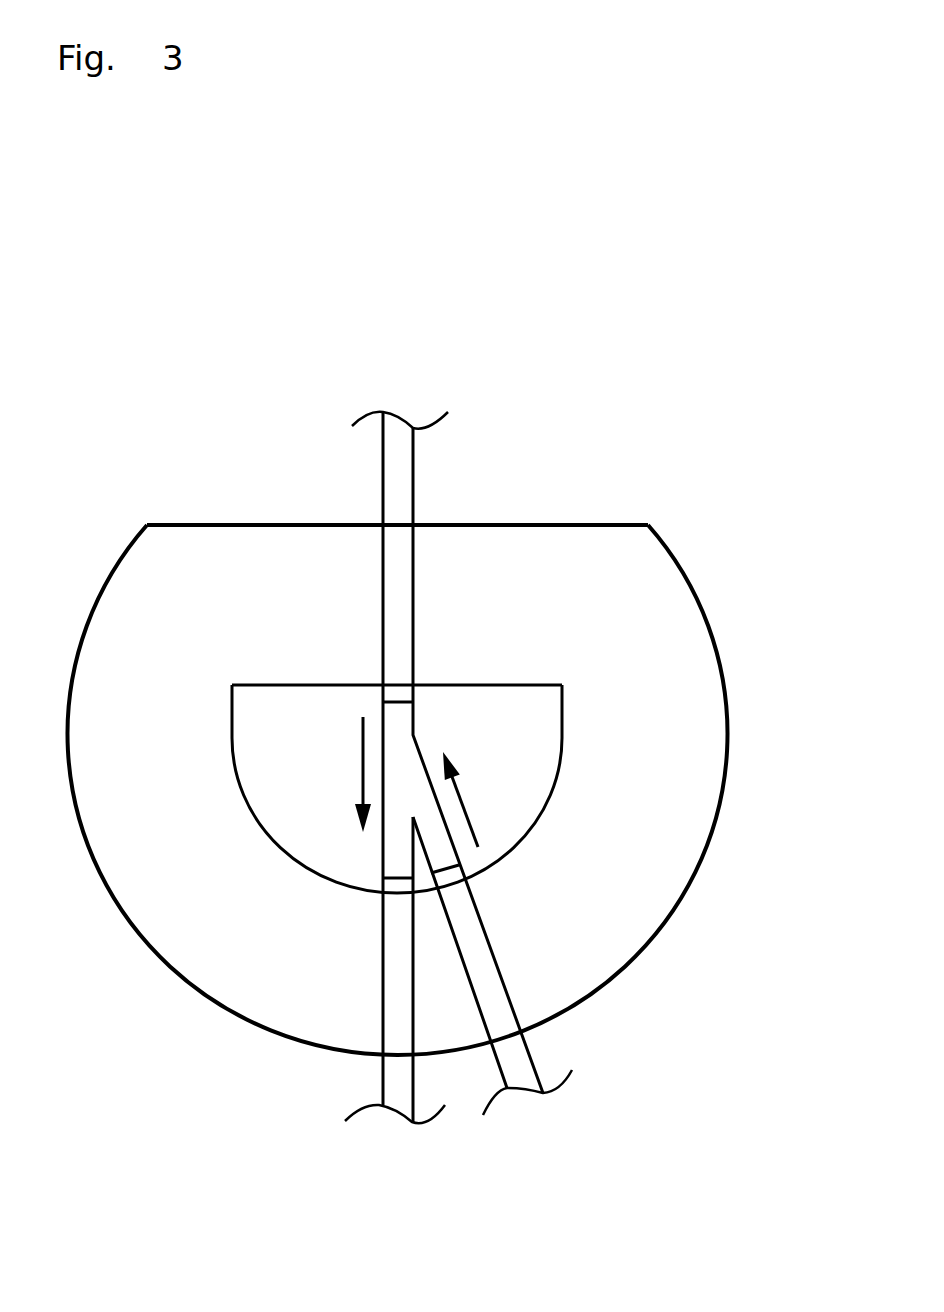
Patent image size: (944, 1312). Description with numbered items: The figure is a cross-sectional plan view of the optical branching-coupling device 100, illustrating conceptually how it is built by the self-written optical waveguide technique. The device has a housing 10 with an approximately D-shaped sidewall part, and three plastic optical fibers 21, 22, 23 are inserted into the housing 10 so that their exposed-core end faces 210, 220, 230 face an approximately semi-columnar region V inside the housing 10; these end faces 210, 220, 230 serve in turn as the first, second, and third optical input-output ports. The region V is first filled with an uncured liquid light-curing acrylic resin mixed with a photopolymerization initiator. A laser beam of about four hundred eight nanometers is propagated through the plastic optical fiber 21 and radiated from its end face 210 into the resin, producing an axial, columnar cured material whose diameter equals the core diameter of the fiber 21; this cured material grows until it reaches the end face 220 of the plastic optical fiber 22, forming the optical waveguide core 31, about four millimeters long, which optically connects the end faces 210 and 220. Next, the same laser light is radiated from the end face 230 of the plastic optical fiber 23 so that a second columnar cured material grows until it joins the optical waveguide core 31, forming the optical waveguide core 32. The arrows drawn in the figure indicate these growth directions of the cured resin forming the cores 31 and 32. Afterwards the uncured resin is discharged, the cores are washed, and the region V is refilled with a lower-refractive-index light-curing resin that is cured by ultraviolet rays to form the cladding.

The optical branching-coupling device 100 is at (614, 443).
The housing 10 is at (645, 655).
The approximately semi-columnar region V is at (313, 765).
The plastic optical fiber 21 is at (398, 475).
The end face 210 is at (397, 702).
The plastic optical fiber 22 is at (395, 1087).
The end face 220 is at (395, 880).
The plastic optical fiber 23 is at (510, 1058).
The end face 230 is at (452, 868).
The optical waveguide core 31 is at (395, 830).
The optical waveguide core 32 is at (435, 831).